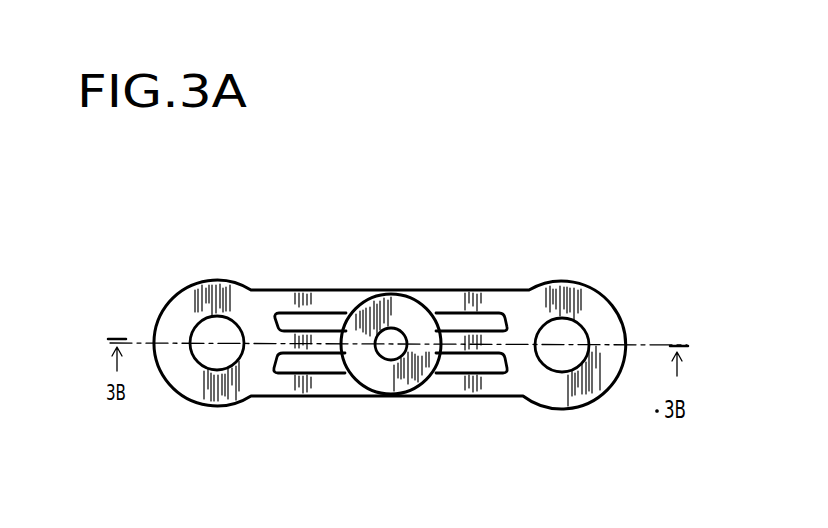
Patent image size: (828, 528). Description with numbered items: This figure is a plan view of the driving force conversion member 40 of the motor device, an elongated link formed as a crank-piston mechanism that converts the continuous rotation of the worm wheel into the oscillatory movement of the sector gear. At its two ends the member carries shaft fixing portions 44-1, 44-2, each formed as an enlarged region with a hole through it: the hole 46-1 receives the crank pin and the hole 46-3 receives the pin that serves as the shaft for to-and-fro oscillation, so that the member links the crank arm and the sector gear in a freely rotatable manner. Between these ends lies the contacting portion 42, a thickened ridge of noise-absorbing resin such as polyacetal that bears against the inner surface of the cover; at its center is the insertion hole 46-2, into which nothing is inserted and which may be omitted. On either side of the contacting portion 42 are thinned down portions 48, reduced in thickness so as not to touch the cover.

The driving force conversion member 40 is at (193, 284).
The contacting portion 42 is at (388, 294).
The shaft fixing portion 44-1 is at (172, 307).
The shaft fixing portion 44-2 is at (568, 290).
The hole 46-1 is at (218, 358).
The insertion hole 46-2 is at (390, 352).
The hole 46-3 is at (570, 358).
The thinned down portions 48 is at (296, 318).